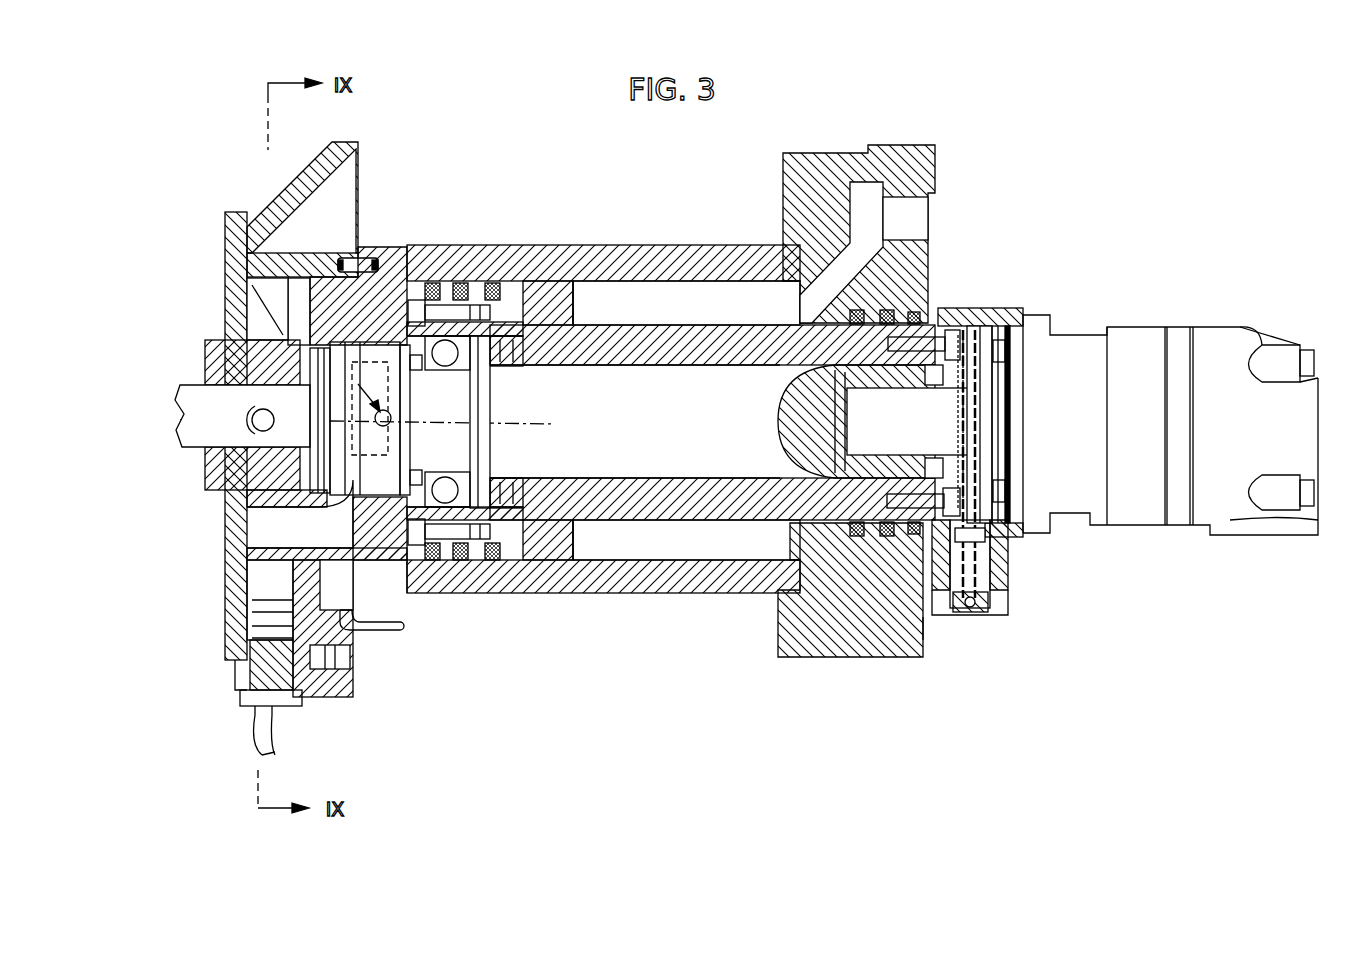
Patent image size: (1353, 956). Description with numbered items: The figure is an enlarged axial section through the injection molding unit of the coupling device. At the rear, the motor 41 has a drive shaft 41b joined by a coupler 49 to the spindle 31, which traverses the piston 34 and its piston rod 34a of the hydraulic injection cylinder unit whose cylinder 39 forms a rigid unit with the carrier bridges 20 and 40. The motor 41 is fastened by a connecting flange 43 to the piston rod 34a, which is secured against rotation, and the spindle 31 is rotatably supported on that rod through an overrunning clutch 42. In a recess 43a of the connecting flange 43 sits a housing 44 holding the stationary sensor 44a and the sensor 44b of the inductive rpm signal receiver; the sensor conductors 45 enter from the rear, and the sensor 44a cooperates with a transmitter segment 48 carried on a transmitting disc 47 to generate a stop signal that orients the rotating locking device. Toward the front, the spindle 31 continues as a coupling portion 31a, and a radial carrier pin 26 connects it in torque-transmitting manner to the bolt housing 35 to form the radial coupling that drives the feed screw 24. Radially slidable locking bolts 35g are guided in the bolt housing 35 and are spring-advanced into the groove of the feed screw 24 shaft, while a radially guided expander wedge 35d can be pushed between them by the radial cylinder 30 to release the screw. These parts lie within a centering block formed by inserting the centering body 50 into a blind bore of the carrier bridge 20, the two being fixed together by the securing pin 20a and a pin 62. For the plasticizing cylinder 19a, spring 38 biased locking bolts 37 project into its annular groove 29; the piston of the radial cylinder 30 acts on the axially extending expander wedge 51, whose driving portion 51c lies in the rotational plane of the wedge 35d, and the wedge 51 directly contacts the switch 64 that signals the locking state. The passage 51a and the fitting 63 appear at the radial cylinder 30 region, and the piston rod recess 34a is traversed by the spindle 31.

The plasticizing cylinder 19a is at (203, 470).
The carrier bridge 20 is at (328, 222).
The securing pin 20a is at (362, 258).
The feed screw 24 is at (195, 408).
The radial carrier pin 26 is at (460, 422).
The annular groove 29 is at (262, 355).
The radial cylinder 30 is at (275, 586).
The spindle 31 is at (712, 422).
The coupling portion 31a is at (402, 440).
The piston 34 is at (553, 318).
The piston rod 34a is at (693, 340).
The bolt housing 35 is at (300, 408).
The expander wedge 35d is at (400, 470).
The locking bolts 35g is at (392, 419).
The locking bolts 37 is at (277, 308).
The springs 38 is at (250, 421).
The cylinder 39 is at (648, 262).
The carrier bridge 40 is at (915, 182).
The motor 41 is at (1133, 310).
The drive shaft 41b is at (852, 418).
The overrunning clutch 42 is at (948, 333).
The connecting flange 43 is at (1018, 573).
The recess 43a is at (995, 580).
The housing 44 is at (953, 615).
The stationary sensor 44a is at (928, 618).
The sensor 44b is at (983, 528).
The sensor conductors 45 is at (975, 612).
The transmitting disc 47 is at (995, 488).
The transmitter segment 48 is at (935, 480).
The coupler 49 is at (877, 372).
The centering body 50 is at (418, 252).
The expander wedge 51 is at (238, 543).
The fluid passage 51a is at (263, 531).
The driving portion 51c is at (440, 590).
The pin 62 is at (240, 270).
The fitting 63 is at (345, 654).
The switch 64 is at (335, 596).